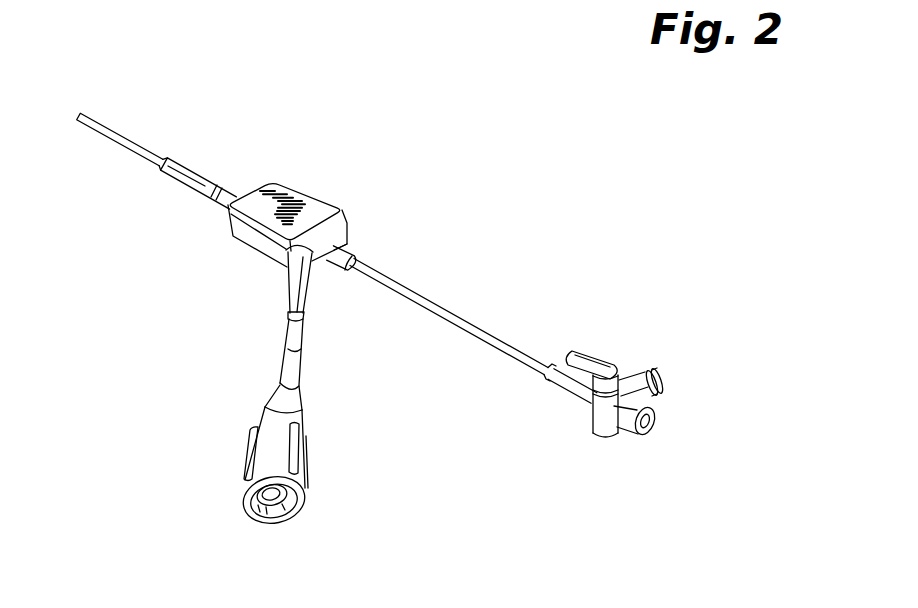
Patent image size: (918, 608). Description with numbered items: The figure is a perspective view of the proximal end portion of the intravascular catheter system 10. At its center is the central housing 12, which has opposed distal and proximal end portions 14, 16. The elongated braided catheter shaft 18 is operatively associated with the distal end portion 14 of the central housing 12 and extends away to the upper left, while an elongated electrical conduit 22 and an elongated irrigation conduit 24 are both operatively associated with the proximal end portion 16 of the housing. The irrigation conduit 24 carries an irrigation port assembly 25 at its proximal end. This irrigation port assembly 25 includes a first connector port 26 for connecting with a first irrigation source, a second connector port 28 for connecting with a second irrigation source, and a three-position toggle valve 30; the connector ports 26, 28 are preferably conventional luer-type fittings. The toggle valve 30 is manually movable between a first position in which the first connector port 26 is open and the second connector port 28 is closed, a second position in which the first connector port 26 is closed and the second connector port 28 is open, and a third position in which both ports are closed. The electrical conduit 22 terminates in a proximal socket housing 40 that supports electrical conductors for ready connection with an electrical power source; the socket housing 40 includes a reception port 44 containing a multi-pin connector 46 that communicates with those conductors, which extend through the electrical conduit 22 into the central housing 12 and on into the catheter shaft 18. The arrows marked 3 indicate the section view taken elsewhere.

The section line of FIG. 3 is at (197, 176).
The catheter system 10 is at (577, 230).
The central housing 12 is at (281, 191).
The distal end portion 14 is at (227, 220).
The proximal end portion 16 is at (338, 236).
The braided catheter shaft 18 is at (97, 130).
The electrical conduit 22 is at (290, 340).
The irrigation conduit 24 is at (438, 316).
The irrigation port assembly 25 is at (578, 414).
The first connector port 26 is at (639, 386).
The second connector port 28 is at (618, 440).
The three-position toggle valve 30 is at (589, 355).
The socket housing 40 is at (253, 437).
The reception port 44 is at (277, 521).
The multi-pin connector 46 is at (258, 521).